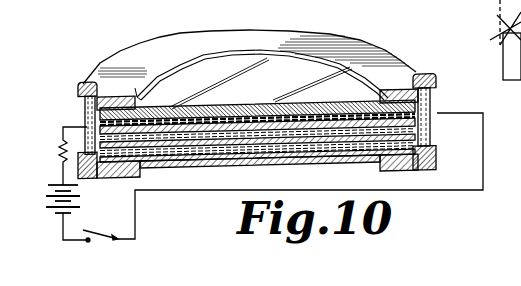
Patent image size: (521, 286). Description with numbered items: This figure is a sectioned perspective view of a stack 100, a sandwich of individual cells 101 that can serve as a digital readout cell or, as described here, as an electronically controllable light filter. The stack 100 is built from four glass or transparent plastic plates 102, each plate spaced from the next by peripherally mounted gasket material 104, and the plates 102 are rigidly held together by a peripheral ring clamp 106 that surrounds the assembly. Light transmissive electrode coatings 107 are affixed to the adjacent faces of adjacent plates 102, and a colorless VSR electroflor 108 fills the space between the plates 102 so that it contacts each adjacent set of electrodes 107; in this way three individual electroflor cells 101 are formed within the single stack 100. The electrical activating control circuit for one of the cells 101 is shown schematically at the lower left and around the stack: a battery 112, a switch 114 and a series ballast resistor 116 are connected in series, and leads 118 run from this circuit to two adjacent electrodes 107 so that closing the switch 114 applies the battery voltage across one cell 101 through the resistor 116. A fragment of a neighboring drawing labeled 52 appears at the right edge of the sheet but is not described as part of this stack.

The stack 100 is at (287, 114).
The peripheral ring clamp 106 is at (152, 45).
The plates 102 is at (313, 135).
The light transmissive electrode coatings 107 is at (349, 145).
The individual cells 101 is at (250, 165).
The gasket material 104 is at (437, 127).
The colorless VSR electroflor 108 is at (373, 160).
The series ballast resistor 116 is at (56, 128).
The battery 112 is at (60, 224).
The switch 114 is at (108, 241).
The leads 118 is at (140, 236).
The adjacent figure element 52 is at (503, 42).